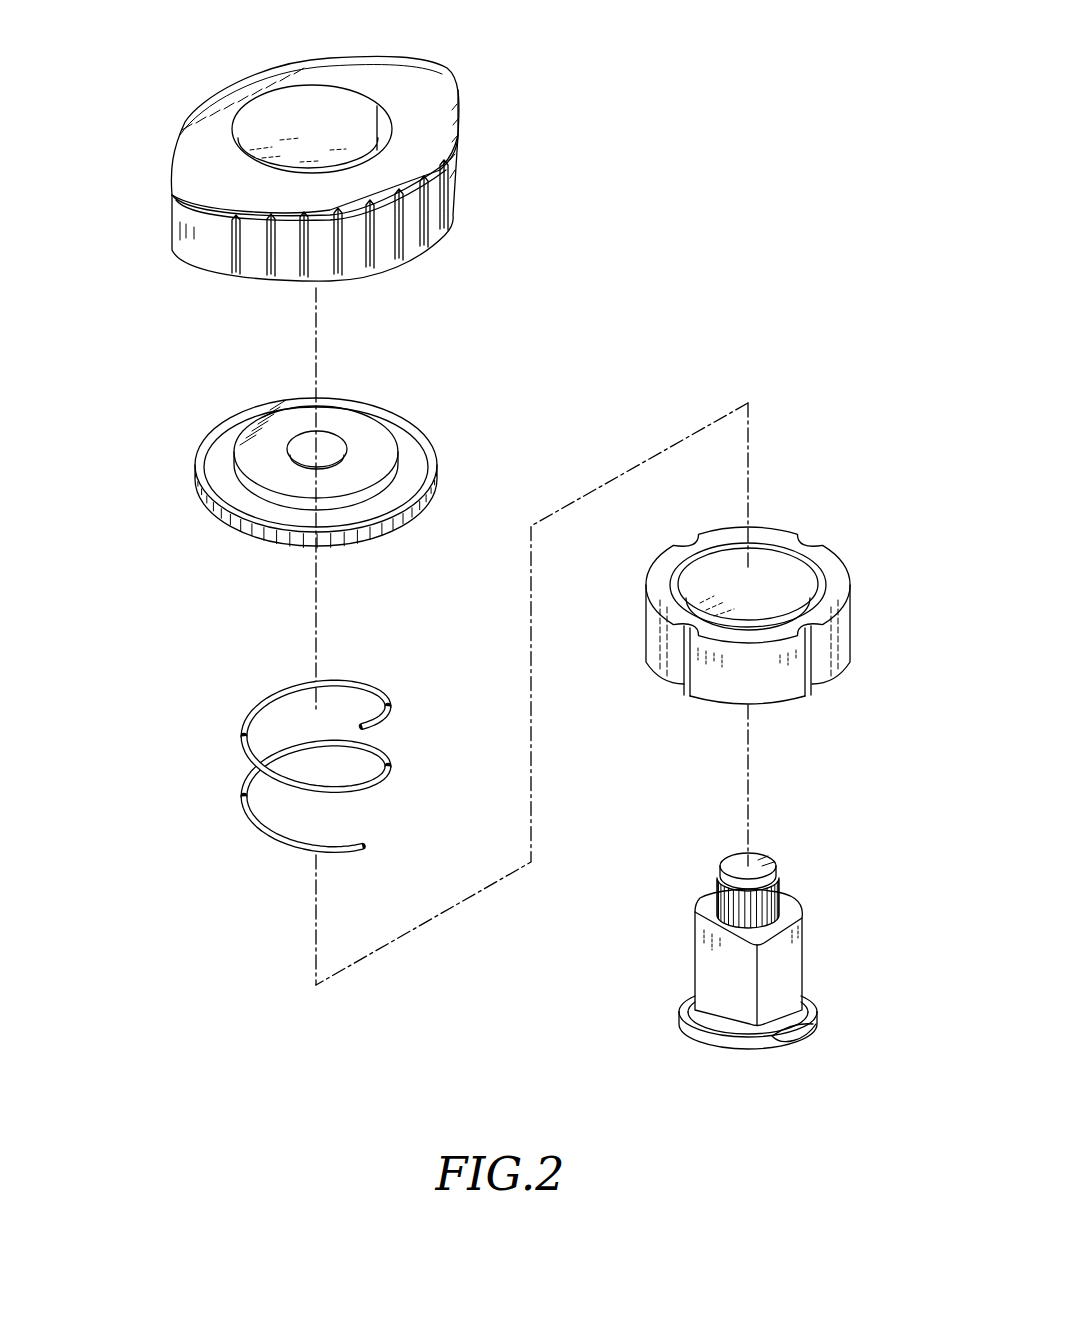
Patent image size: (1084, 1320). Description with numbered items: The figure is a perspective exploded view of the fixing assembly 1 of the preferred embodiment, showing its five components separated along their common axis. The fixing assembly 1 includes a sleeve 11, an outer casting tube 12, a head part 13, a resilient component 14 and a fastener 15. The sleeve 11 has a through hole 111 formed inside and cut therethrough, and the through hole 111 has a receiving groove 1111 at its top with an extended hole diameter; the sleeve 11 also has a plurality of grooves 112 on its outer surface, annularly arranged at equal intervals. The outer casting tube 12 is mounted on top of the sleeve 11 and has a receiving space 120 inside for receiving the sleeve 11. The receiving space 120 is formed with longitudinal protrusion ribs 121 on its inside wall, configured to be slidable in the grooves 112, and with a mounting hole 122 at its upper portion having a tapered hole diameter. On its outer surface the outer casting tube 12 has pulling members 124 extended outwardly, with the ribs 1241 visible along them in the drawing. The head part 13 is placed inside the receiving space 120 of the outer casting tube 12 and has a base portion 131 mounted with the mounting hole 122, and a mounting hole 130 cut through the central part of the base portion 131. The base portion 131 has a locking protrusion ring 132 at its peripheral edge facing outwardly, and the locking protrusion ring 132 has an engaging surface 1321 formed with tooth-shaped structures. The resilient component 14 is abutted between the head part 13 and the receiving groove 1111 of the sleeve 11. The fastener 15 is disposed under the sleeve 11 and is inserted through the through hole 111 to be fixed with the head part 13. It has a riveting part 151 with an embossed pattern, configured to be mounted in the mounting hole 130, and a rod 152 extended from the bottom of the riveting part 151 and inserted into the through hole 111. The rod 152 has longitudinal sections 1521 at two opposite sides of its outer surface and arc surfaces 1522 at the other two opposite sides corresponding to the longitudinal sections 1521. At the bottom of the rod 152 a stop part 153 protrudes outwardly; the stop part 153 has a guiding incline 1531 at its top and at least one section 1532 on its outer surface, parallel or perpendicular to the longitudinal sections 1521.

The fixing assembly 1 is at (601, 278).
The sleeve 11 is at (840, 580).
The through hole 111 is at (789, 590).
The receiving groove 1111 is at (717, 575).
The grooves 112 is at (820, 649).
The outer casting tube 12 is at (452, 208).
The receiving space 120 is at (359, 116).
The longitudinal protrusion ribs 121 is at (385, 143).
The mounting hole 122 is at (308, 97).
The pulling members 124 is at (132, 160).
The ribs on cap side wall 1241 is at (180, 240).
The head part 13 is at (186, 455).
The mounting hole 130 is at (290, 447).
The base portion 131 is at (352, 430).
The locking protrusion ring 132 is at (410, 455).
The engaging surface 1321 is at (434, 484).
The resilient component 14 is at (250, 740).
The fastener 15 is at (628, 888).
The riveting part 151 is at (720, 902).
The rod 152 is at (848, 906).
The longitudinal sections 1521 is at (785, 972).
The arc surfaces 1522 is at (707, 965).
The stop part 153 is at (740, 1047).
The guiding incline 1531 is at (685, 1015).
The section 1532 is at (795, 1033).